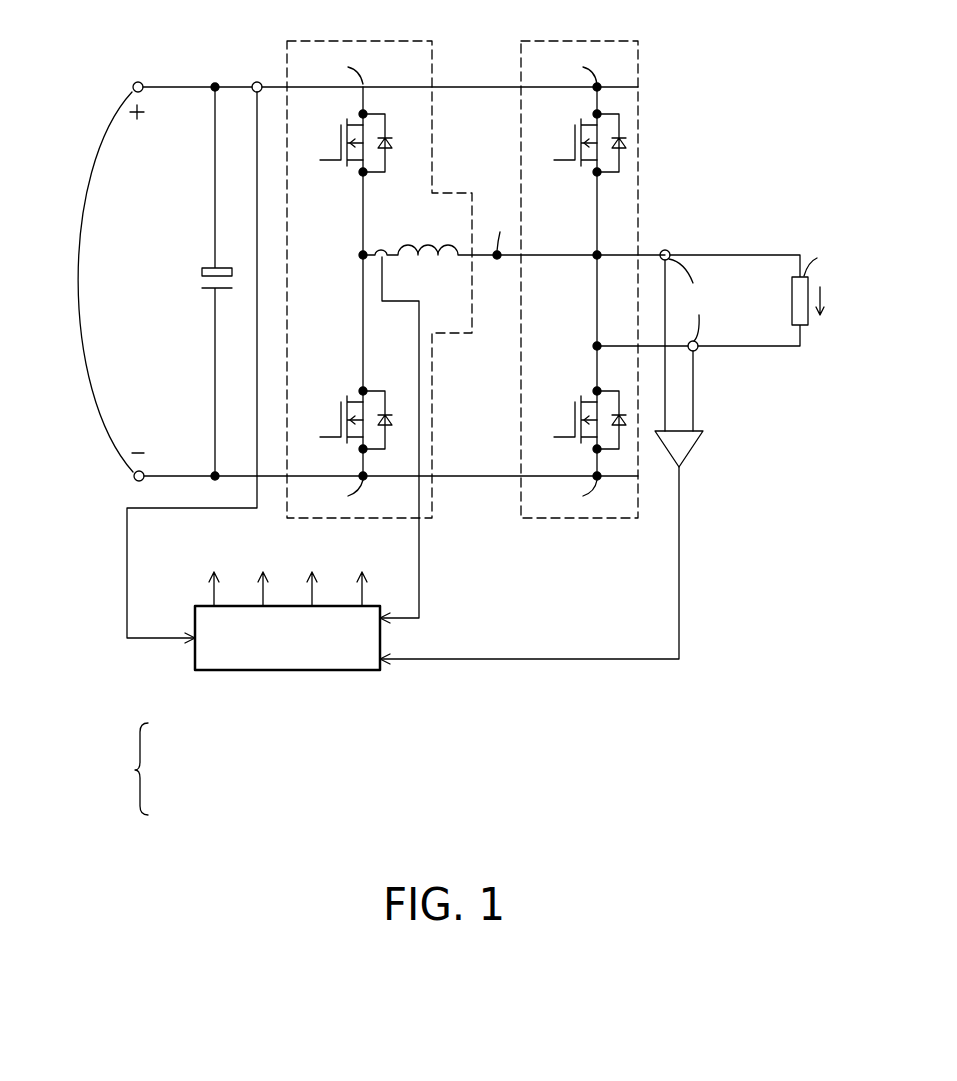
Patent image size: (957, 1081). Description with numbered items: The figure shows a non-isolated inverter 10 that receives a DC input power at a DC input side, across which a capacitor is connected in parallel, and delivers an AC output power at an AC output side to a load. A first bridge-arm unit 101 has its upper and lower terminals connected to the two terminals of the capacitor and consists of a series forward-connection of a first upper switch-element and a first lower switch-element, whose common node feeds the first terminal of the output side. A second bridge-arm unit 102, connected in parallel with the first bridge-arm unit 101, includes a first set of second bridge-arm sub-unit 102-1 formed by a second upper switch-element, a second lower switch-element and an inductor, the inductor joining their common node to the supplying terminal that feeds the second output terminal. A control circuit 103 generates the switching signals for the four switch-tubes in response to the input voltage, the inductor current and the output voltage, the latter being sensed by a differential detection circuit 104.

The non-isolated inverter 10 is at (460, 373).
The first bridge-arm unit 101 is at (578, 38).
The second bridge-arm unit 102 is at (333, 38).
The first set of second bridge-arm sub-unit 102-1 is at (123, 770).
The control circuit 103 is at (297, 670).
The differential detection circuit 104 is at (690, 452).